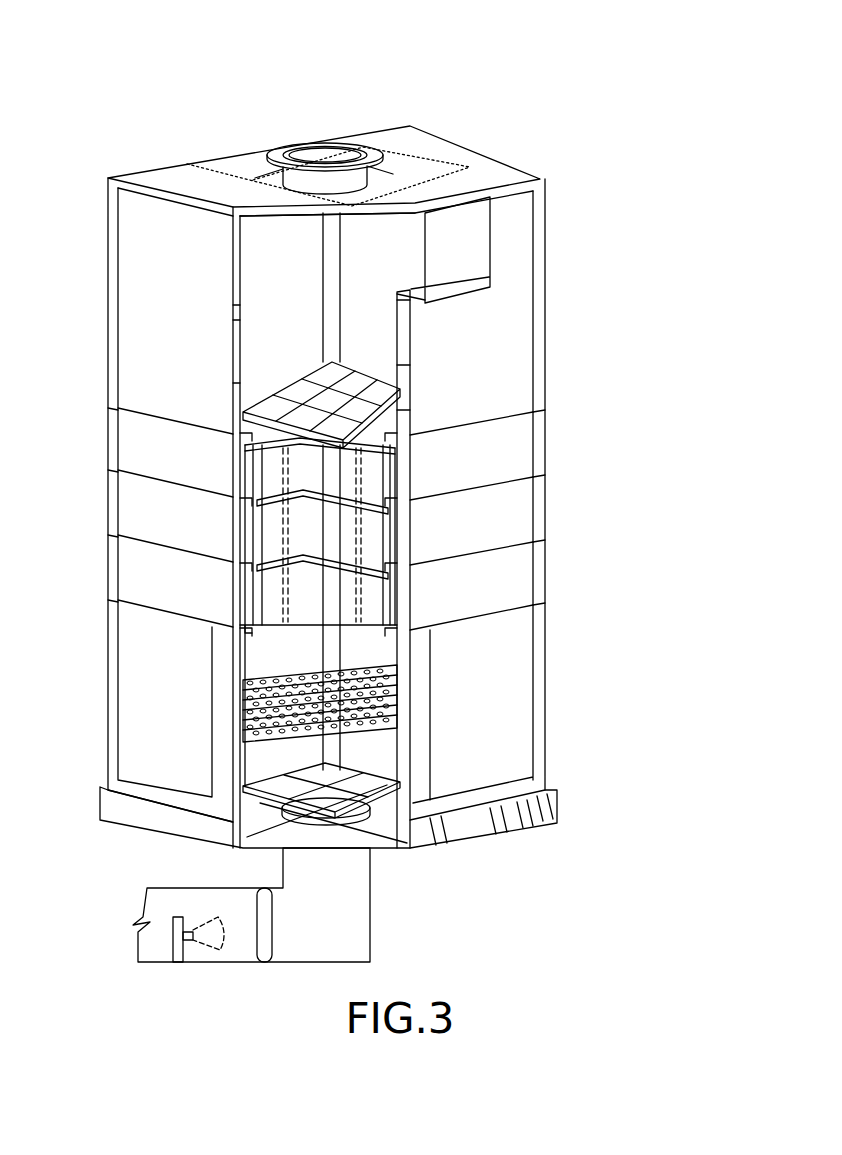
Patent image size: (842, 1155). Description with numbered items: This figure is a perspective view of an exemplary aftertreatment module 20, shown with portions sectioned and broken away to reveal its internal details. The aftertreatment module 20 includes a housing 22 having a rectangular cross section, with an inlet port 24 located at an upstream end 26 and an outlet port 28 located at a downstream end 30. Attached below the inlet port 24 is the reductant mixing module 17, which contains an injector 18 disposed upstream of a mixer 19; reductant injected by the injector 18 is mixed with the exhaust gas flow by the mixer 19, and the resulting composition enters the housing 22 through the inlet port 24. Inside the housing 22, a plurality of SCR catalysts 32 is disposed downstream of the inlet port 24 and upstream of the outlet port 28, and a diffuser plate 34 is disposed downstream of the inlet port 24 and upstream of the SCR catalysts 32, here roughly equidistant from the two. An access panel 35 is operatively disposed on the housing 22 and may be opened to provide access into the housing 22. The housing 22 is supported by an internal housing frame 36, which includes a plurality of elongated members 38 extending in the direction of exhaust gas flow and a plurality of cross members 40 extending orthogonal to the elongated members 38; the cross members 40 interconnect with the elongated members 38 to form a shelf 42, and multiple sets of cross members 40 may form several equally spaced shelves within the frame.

The aftertreatment module 20 is at (543, 113).
The downstream end 30 is at (230, 172).
The outlet port 28 is at (333, 155).
The housing 22 is at (535, 352).
The elongated members 38 is at (333, 250).
The internal housing frame 36 is at (360, 275).
The access panel 35 is at (473, 270).
The cross members 40 is at (273, 378).
The shelf 42 is at (285, 360).
The SCR catalysts 32 is at (363, 602).
The diffuser plate 34 is at (250, 697).
The inlet port 24 is at (347, 813).
The upstream end 26 is at (163, 833).
The reductant mixing module 17 is at (172, 884).
The injector 18 is at (175, 956).
The mixer 19 is at (260, 952).